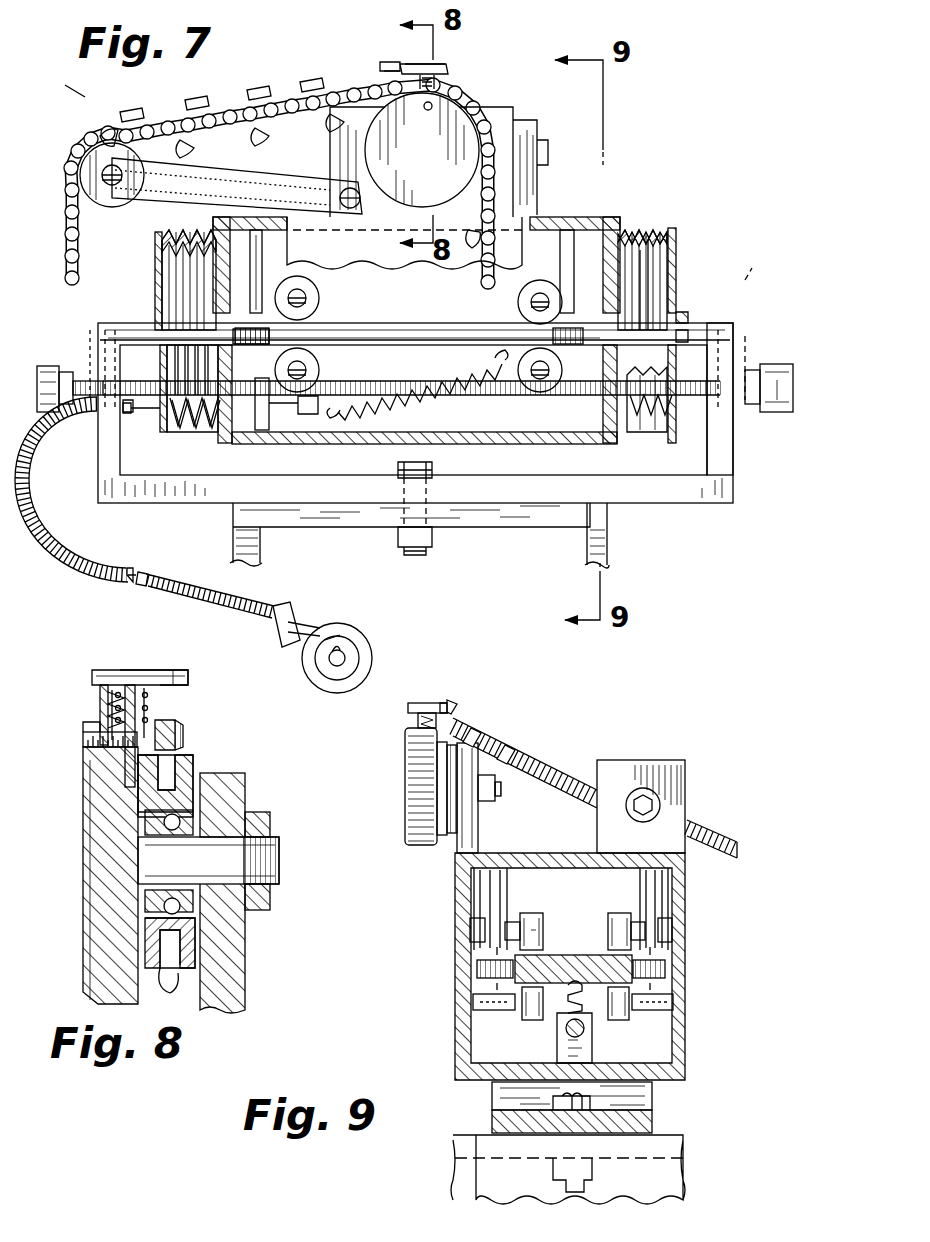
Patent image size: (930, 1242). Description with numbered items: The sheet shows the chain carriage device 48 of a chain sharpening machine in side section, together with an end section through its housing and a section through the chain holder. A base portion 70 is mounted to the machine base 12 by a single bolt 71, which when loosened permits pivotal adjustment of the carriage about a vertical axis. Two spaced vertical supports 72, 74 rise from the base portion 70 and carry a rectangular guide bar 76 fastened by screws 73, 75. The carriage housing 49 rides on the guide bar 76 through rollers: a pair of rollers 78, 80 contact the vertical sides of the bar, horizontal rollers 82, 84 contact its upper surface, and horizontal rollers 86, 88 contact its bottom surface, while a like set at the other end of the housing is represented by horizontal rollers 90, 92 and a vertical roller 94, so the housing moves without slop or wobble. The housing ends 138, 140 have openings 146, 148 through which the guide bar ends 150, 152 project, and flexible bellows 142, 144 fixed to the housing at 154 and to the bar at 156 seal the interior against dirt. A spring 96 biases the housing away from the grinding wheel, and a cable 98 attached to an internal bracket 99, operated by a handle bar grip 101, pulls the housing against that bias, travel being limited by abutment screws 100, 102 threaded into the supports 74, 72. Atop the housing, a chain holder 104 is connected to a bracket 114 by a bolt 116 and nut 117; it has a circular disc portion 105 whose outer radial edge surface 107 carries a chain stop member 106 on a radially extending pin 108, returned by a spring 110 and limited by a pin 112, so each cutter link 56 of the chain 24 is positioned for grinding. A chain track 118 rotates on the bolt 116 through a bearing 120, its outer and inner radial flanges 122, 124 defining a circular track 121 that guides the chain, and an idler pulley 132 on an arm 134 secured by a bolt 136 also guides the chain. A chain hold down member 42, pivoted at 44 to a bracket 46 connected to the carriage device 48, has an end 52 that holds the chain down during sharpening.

In FIG. 7, the base 12 is at (600, 548).
In FIG. 9, the base 12 is at (655, 1151).
In FIG. 7, the chain 24 is at (300, 92).
In FIG. 8, the chain 24 is at (178, 726).
In FIG. 9, the chain hold down member 42 is at (589, 757).
In FIG. 9, the pivotal connection 44 is at (648, 796).
In FIG. 9, the bracket 46 is at (661, 790).
In FIG. 7, the chain carriage device 48 is at (558, 214).
In FIG. 9, the chain carriage device 48 is at (690, 1073).
In FIG. 7, the carriage housing 49 is at (612, 215).
In FIG. 9, the carriage housing 49 is at (455, 939).
In FIG. 9, the end of hold down member 52 is at (477, 724).
In FIG. 7, the cutter link 56 is at (427, 66).
In FIG. 8, the cutter link 56 is at (190, 676).
In FIG. 9, the cutter link 56 is at (457, 709).
In FIG. 7, the base portion 70 is at (620, 497).
In FIG. 9, the base portion 70 is at (497, 1118).
In FIG. 7, the bolt 71 is at (426, 551).
In FIG. 9, the bolt 71 is at (592, 1102).
In FIG. 7, the vertical support 72 is at (735, 470).
In FIG. 9, the vertical support 72 is at (500, 1093).
In FIG. 7, the screw 73 is at (726, 326).
In FIG. 7, the vertical support 74 is at (85, 374).
In FIG. 7, the screw 75 is at (97, 323).
In FIG. 7, the guide bar 76 is at (662, 306).
In FIG. 9, the guide bar 76 is at (570, 954).
In FIG. 9, the roller 78 is at (665, 968).
In FIG. 7, the roller 80 is at (556, 336).
In FIG. 9, the roller 80 is at (478, 970).
In FIG. 7, the horizontal roller 82 is at (518, 302).
In FIG. 9, the horizontal roller 82 is at (532, 914).
In FIG. 9, the horizontal roller 84 is at (621, 917).
In FIG. 7, the horizontal roller 86 is at (546, 393).
In FIG. 9, the horizontal roller 86 is at (532, 1021).
In FIG. 9, the horizontal roller 88 is at (622, 1026).
In FIG. 7, the horizontal roller 90 is at (320, 298).
In FIG. 7, the horizontal roller 92 is at (320, 370).
In FIG. 7, the vertical roller 94 is at (270, 337).
In FIG. 7, the spring 96 is at (418, 398).
In FIG. 7, the cable 98 is at (148, 410).
In FIG. 7, the bracket 99 is at (256, 430).
In FIG. 7, the abutment screw 100 is at (75, 489).
In FIG. 7, the handle bar grip 101 is at (370, 649).
In FIG. 7, the abutment screw 102 is at (778, 366).
In FIG. 7, the chain holder 104 is at (450, 134).
In FIG. 8, the chain holder 104 is at (80, 846).
In FIG. 9, the chain holder 104 is at (405, 802).
In FIG. 7, the circular disc portion 105 is at (386, 78).
In FIG. 8, the circular disc portion 105 is at (109, 910).
In FIG. 9, the circular disc portion 105 is at (436, 764).
In FIG. 7, the chain stop member 106 is at (448, 70).
In FIG. 8, the chain stop member 106 is at (118, 671).
In FIG. 9, the chain stop member 106 is at (422, 703).
In FIG. 8, the outer radial edge surface 107 is at (95, 722).
In FIG. 9, the outer radial edge surface 107 is at (417, 720).
In FIG. 8, the pin 108 is at (150, 704).
In FIG. 8, the spring 110 is at (104, 711).
In FIG. 8, the pin 112 is at (92, 678).
In FIG. 8, the bracket 114 is at (243, 786).
In FIG. 9, the bracket 114 is at (465, 758).
In FIG. 8, the bolt 116 is at (245, 816).
In FIG. 8, the nut 117 is at (272, 829).
In FIG. 9, the nut 117 is at (490, 772).
In FIG. 8, the chain track 118 is at (193, 758).
In FIG. 8, the bearing 120 is at (209, 774).
In FIG. 8, the track 121 is at (172, 948).
In FIG. 8, the outer radial flange 122 is at (192, 987).
In FIG. 8, the inner radial flange 124 is at (191, 957).
In FIG. 7, the idler pulley 132 is at (100, 152).
In FIG. 7, the arm 134 is at (222, 182).
In FIG. 7, the bolt 136 is at (341, 198).
In FIG. 7, the housing end 138 is at (642, 242).
In FIG. 7, the housing end 140 is at (166, 268).
In FIG. 7, the flexible bellows 142 is at (657, 280).
In FIG. 7, the flexible bellows 144 is at (172, 290).
In FIG. 7, the opening 146 is at (666, 256).
In FIG. 7, the opening 148 is at (150, 313).
In FIG. 7, the guide bar end 150 is at (666, 314).
In FIG. 7, the guide bar end 152 is at (130, 320).
In FIG. 7, the bellows-to-housing connection 154 is at (621, 235).
In FIG. 7, the bellows-to-guide-bar connection 156 is at (747, 282).